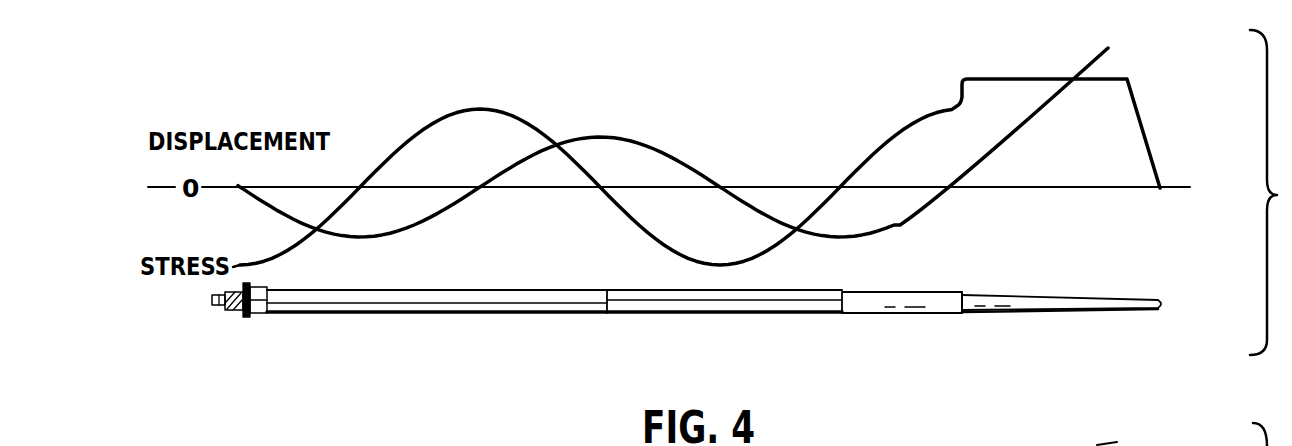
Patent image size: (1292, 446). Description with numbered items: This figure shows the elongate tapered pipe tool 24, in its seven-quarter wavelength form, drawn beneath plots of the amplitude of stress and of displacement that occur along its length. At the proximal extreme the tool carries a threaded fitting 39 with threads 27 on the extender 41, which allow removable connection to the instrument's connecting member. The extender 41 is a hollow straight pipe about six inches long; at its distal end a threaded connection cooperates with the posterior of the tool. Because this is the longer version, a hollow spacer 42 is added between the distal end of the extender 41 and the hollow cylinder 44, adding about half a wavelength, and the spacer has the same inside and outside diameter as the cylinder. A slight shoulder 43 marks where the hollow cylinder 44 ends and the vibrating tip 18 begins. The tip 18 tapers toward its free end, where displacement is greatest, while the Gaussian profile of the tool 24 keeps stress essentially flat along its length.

The vibrating tip 18 is at (1160, 310).
The elongate tapered pipe tool 24 is at (474, 315).
The threads 27 is at (232, 288).
The threaded fitting 39 is at (229, 311).
The extender 41 is at (488, 297).
The hollow spacer 42 is at (612, 316).
The shoulder 43 is at (963, 315).
The hollow cylinder 44 is at (925, 292).